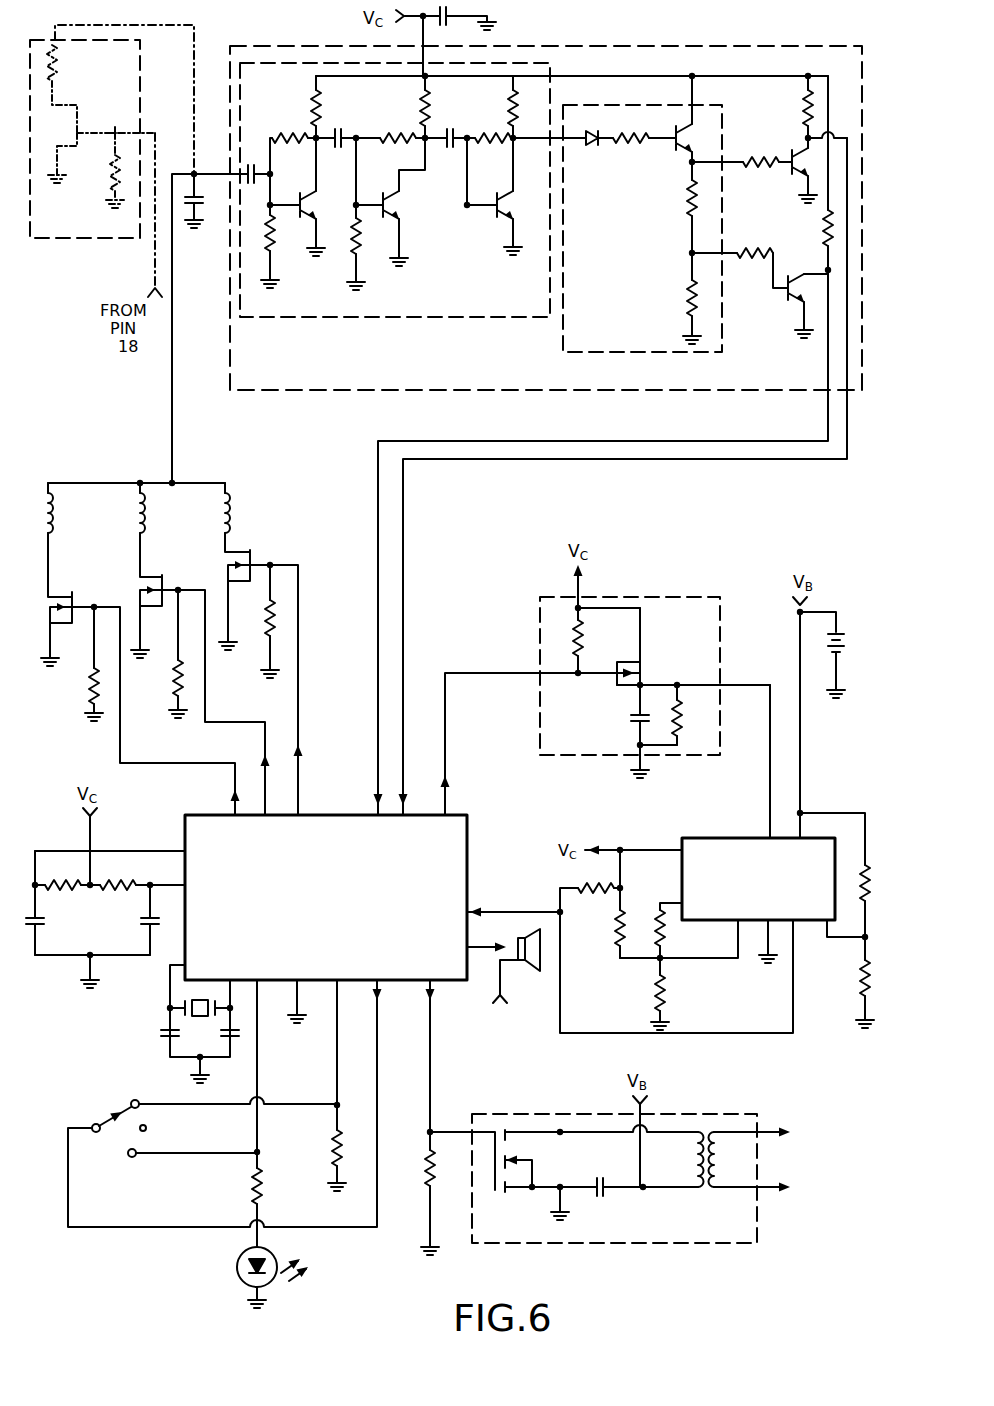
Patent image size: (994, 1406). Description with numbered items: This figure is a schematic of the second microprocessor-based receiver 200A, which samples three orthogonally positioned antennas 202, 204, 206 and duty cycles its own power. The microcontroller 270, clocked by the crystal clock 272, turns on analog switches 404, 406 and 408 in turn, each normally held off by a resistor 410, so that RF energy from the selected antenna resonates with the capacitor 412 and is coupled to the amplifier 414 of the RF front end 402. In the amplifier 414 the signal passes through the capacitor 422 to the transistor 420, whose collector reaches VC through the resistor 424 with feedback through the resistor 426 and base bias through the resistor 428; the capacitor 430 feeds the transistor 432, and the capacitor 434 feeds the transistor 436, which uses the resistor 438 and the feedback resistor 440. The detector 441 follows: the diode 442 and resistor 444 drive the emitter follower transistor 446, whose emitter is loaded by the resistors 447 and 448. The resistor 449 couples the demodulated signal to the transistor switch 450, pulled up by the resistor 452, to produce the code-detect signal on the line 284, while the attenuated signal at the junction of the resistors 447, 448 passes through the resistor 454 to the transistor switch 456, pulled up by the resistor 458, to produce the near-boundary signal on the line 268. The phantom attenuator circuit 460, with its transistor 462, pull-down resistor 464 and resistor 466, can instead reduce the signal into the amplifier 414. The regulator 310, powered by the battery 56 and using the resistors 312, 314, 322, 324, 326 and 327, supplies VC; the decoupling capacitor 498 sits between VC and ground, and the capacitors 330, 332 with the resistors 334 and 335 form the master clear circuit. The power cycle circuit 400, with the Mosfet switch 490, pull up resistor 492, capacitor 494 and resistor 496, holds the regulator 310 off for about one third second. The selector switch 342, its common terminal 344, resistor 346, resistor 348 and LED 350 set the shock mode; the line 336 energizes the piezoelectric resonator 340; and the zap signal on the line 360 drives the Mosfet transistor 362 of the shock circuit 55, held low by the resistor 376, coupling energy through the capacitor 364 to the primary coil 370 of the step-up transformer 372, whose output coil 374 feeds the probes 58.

The attenuator circuit 460 is at (67, 250).
The resistor 466 is at (66, 62).
The transistor 462 is at (70, 100).
The pull-down resistor 464 is at (105, 198).
The capacitor 412 is at (207, 212).
The capacitor 422 is at (252, 162).
The resistor 424 is at (306, 112).
The resistor 426 is at (290, 150).
The transistor 420 is at (312, 211).
The resistor 428 is at (282, 262).
The capacitor 430 is at (340, 126).
The transistor 432 is at (408, 232).
The capacitor 434 is at (448, 150).
The negative feedback resistor 440 is at (479, 150).
The transistor 436 is at (508, 235).
The resistor 438 is at (520, 85).
The diode 442 is at (593, 152).
The resistor 444 is at (639, 152).
The emitter follower transistor 446 is at (690, 133).
The resistor 447 is at (689, 225).
The resistor 448 is at (682, 300).
The resistor 449 is at (751, 172).
The transistor switch 450 is at (796, 143).
The resistor 452 is at (822, 72).
The resistor 458 is at (822, 243).
The resistor 454 is at (748, 275).
The transistor switch 456 is at (800, 330).
The detector 441 is at (563, 346).
The amplifier 414 is at (302, 322).
The RF front end 402 is at (488, 392).
The decoupling capacitor 498 is at (465, 8).
The line 284 is at (405, 598).
The line 268 is at (378, 680).
The antenna 202 is at (52, 497).
The antenna 204 is at (138, 516).
The antenna 206 is at (232, 506).
The analog switch 404 is at (81, 589).
The analog switch 406 is at (171, 581).
The analog switch 408 is at (258, 553).
The resistor 410 is at (284, 621).
The microcontroller 270 is at (470, 817).
The resistor 335 is at (61, 870).
The resistor 334 is at (123, 870).
The capacitor 330 is at (45, 952).
The capacitor 332 is at (143, 952).
The crystal clock 272 is at (143, 1041).
The resistor 346 is at (326, 1161).
The resistor 348 is at (246, 1201).
The LED 350 is at (236, 1273).
The selector switch 342 is at (102, 1105).
The common terminal 344 is at (93, 1126).
The line 360 is at (438, 1071).
The resistor 376 is at (429, 1191).
The shock circuit 55 is at (608, 1105).
The N-channel Mosfet transistor 362 is at (483, 1211).
The capacitor 364 is at (599, 1201).
The primary coil 370 is at (684, 1196).
The step-up transformer 372 is at (725, 1161).
The output coil 374 is at (719, 1199).
The probes 58 is at (826, 1171).
The line 336 is at (485, 946).
The piezoelectric resonator 340 is at (536, 985).
The resistor 327 is at (562, 885).
The resistor 326 is at (615, 951).
The resistor 322 is at (668, 956).
The resistor 324 is at (655, 1011).
The regulator 310 is at (747, 819).
The resistor 312 is at (862, 862).
The resistor 314 is at (860, 989).
The power cycle circuit 400 is at (673, 593).
The pull up resistor 492 is at (570, 641).
The Mosfet switch 490 is at (648, 676).
The capacitor 494 is at (630, 732).
The resistor 496 is at (690, 743).
The battery 56 is at (839, 631).
The receiver 200A is at (371, 1291).